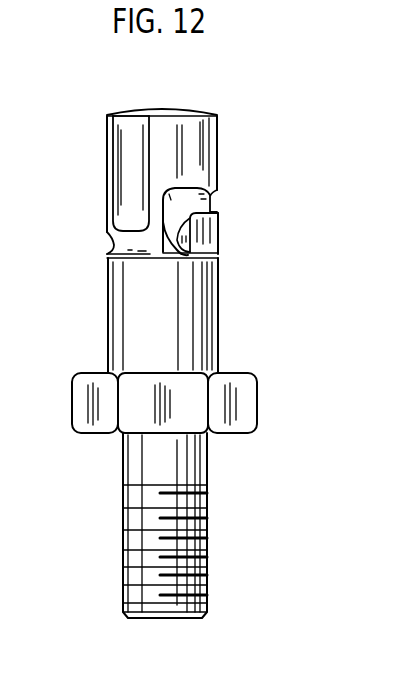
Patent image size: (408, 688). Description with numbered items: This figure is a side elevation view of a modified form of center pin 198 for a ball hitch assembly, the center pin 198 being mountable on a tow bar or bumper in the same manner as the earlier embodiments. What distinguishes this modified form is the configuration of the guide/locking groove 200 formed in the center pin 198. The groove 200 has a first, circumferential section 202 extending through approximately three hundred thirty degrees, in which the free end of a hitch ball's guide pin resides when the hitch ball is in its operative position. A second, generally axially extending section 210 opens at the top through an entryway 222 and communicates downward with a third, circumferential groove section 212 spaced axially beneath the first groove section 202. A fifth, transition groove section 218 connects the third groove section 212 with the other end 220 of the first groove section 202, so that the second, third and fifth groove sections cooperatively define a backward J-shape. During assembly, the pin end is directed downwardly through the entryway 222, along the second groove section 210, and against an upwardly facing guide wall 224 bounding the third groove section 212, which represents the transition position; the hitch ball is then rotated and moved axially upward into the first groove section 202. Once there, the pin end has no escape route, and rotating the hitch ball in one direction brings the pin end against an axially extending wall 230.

The center pin 198 is at (220, 322).
The guide/locking groove 200 is at (129, 141).
The first, circumferential groove section 202 is at (213, 197).
The second, generally axially extending groove section 210 is at (132, 174).
The third, circumferential groove section 212 is at (142, 257).
The fifth, transition groove section 218 is at (218, 226).
The other end of the first groove section 220 is at (182, 181).
The entryway 222 is at (135, 123).
The upwardly facing guide wall 224 is at (118, 246).
The axially extending wall 230 is at (220, 253).